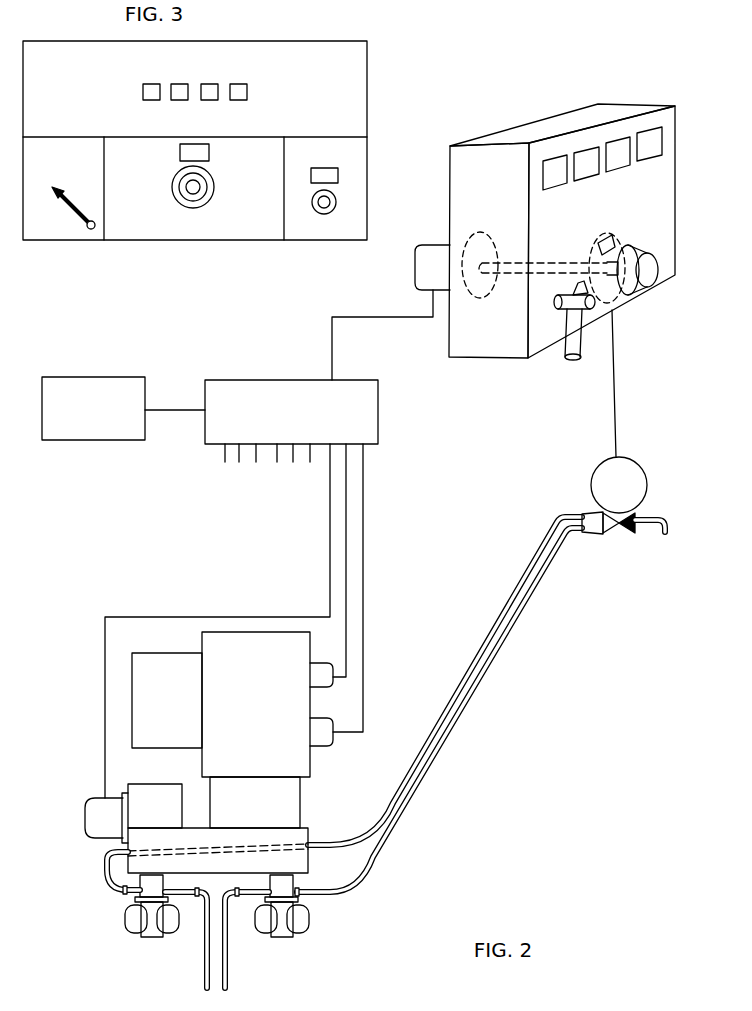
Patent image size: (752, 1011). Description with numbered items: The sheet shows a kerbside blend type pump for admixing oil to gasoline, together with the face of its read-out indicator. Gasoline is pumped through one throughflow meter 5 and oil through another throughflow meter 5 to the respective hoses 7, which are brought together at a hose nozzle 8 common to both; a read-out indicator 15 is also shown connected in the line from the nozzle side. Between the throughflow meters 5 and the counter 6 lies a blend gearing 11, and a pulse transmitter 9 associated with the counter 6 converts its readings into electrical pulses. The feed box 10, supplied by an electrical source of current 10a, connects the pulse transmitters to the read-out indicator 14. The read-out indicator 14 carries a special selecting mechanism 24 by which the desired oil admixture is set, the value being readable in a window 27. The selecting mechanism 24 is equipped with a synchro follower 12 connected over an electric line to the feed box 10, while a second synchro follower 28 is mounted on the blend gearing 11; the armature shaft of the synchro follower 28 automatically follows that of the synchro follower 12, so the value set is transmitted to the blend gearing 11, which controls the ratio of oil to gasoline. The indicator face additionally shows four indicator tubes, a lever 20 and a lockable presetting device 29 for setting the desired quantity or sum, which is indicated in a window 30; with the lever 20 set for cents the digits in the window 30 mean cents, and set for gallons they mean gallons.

In FIG. 3, the read-out indicator 14 is at (258, 42).
In FIG. 2, the read-out indicator 14 is at (504, 137).
In FIG. 2, the synchro follower 12 is at (417, 260).
In FIG. 3, the window 27 is at (203, 152).
In FIG. 2, the window 27 is at (598, 243).
In FIG. 3, the selecting mechanism 24 is at (192, 196).
In FIG. 2, the selecting mechanism 24 is at (644, 282).
In FIG. 3, the lever 20 is at (78, 228).
In FIG. 2, the lever 20 is at (567, 348).
In FIG. 3, the window 30 is at (321, 167).
In FIG. 3, the lockable presetting device 29 is at (323, 209).
In FIG. 2, the read-out indicator 15 is at (610, 463).
In FIG. 2, the hose nozzle 8 is at (622, 535).
In FIG. 2, the hoses 7 is at (550, 563).
In FIG. 2, the electrical source of current 10a is at (77, 427).
In FIG. 2, the feed box 10 is at (215, 432).
In FIG. 2, the counter 6 is at (292, 760).
In FIG. 2, the pulse transmitter 9 is at (320, 722).
In FIG. 2, the blend gearing 11 is at (142, 787).
In FIG. 2, the synchro follower 28 is at (90, 820).
In FIG. 2, the throughflow meter 5 is at (167, 928).